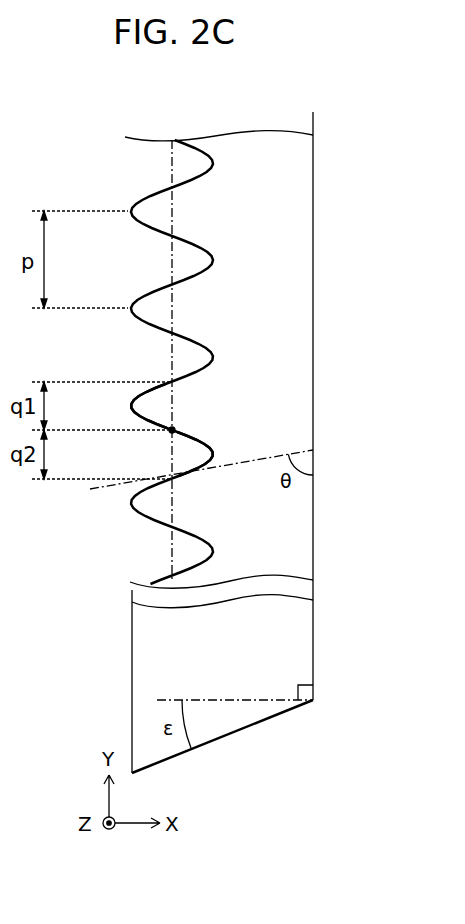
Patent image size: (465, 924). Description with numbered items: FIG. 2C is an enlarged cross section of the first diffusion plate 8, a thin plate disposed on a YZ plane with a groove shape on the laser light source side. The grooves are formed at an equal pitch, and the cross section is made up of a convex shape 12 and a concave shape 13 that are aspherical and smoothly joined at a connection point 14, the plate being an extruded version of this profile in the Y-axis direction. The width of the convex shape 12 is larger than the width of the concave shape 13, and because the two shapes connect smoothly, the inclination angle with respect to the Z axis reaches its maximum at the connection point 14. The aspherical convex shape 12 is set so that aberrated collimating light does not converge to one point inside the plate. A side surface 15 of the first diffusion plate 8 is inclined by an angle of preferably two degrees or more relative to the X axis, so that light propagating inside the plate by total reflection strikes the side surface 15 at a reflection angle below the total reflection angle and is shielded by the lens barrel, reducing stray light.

The first diffusion plate 8 is at (245, 161).
The convex shape 12 is at (130, 405).
The concave shape 13 is at (210, 466).
The connection point 14 is at (169, 432).
The side surface 15 is at (233, 735).